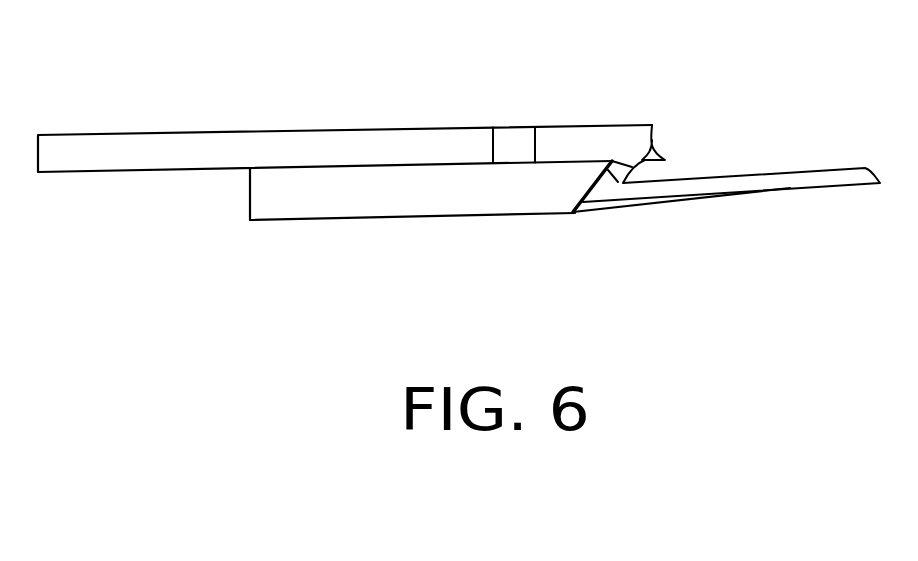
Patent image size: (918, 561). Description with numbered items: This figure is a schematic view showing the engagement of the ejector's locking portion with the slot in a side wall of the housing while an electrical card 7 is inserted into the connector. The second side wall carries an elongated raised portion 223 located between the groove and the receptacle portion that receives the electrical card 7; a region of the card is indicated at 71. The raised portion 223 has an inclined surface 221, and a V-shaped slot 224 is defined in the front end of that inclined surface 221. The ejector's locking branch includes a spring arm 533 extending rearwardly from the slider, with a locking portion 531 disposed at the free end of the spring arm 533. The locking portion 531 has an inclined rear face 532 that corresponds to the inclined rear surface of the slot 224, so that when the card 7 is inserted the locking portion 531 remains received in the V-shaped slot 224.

The electrical card 7 is at (315, 150).
The slot of cover plate 71 is at (522, 140).
The inclined surface 221 is at (667, 212).
The raised portion 223 is at (460, 190).
The V-shaped slot 224 is at (583, 205).
The locking portion 531 is at (648, 142).
The inclined rear face 532 is at (608, 170).
The spring arm 533 is at (770, 183).